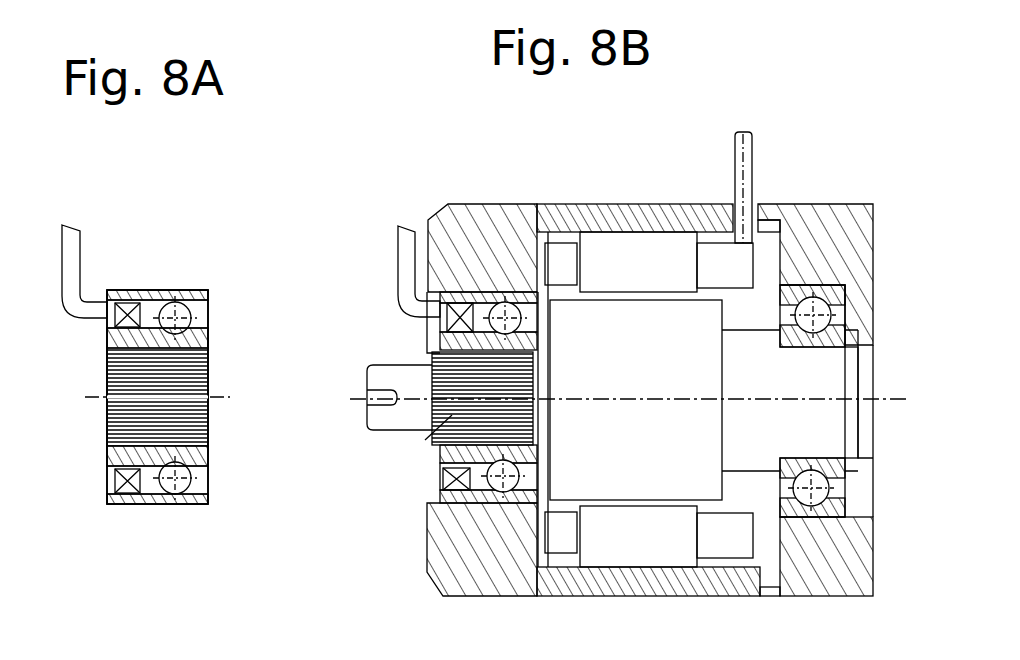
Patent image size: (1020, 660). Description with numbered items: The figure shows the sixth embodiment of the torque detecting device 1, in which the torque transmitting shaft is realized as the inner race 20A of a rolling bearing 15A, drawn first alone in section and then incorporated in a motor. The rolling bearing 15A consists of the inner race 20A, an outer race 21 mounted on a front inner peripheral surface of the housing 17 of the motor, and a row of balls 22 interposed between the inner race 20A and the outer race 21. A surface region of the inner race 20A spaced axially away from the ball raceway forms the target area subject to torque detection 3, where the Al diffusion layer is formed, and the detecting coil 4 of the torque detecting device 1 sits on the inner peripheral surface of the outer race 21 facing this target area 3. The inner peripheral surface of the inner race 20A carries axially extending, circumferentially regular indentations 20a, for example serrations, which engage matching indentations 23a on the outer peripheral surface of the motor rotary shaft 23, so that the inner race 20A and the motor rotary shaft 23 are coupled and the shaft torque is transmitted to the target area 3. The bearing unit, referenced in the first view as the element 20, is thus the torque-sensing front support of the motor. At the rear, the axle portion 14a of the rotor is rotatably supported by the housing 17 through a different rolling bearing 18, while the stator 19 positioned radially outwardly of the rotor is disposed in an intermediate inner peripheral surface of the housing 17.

In FIG. 8A, the torque detecting device 1 is at (70, 345).
In FIG. 8A, the target area subject to torque detection 3 is at (107, 353).
In FIG. 8B, the target area subject to torque detection 3 is at (428, 350).
In FIG. 8A, the detecting coil 4 is at (128, 300).
In FIG. 8B, the detecting coil 4 is at (426, 238).
In FIG. 8B, the axle portion 14a is at (842, 430).
In FIG. 8A, the rolling bearing 15A is at (318, 150).
In FIG. 8B, the rolling bearing 15A is at (496, 276).
In FIG. 8B, the housing 17 is at (690, 205).
In FIG. 8B, the rolling bearing 18 is at (829, 280).
In FIG. 8B, the stator 19 is at (637, 253).
In FIG. 8A, the bearing housing 20 is at (211, 330).
In FIG. 8B, the inner race 20A is at (425, 358).
In FIG. 8A, the indentations 20a is at (130, 410).
In FIG. 8A, the outer race 21 is at (167, 290).
In FIG. 8B, the outer race 21 is at (445, 245).
In FIG. 8A, the balls 22 is at (185, 305).
In FIG. 8B, the balls 22 is at (520, 297).
In FIG. 8B, the motor rotary shaft 23 is at (393, 425).
In FIG. 8B, the indentations 23a is at (425, 440).